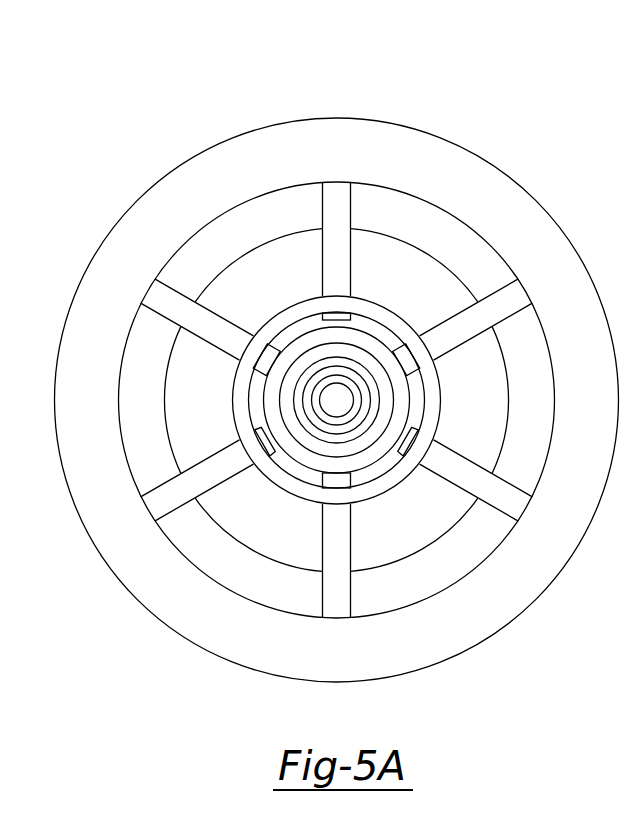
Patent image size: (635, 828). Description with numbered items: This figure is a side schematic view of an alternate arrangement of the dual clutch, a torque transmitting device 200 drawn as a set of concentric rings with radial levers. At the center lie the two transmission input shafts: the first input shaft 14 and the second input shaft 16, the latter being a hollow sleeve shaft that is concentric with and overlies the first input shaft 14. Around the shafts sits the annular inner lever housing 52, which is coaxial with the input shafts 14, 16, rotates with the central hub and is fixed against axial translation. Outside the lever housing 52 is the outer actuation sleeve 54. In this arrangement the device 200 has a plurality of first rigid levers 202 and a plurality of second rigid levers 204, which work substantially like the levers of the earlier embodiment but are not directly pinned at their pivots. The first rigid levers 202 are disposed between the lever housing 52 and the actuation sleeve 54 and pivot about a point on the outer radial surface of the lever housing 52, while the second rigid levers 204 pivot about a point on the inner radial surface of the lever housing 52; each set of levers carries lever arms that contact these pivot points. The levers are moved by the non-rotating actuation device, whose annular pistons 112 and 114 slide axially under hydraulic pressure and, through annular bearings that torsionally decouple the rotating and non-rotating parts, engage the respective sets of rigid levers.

The torque transmitting device 200 is at (464, 132).
The outer actuation sleeve 54 is at (217, 644).
The inner lever housing 52 is at (272, 582).
The first rigid levers 202 is at (345, 215).
The second rigid levers 204 is at (463, 333).
The first input shaft 14 is at (372, 398).
The second input shaft 16 is at (332, 400).
The annular piston 112 is at (362, 340).
The annular piston 114 is at (303, 312).